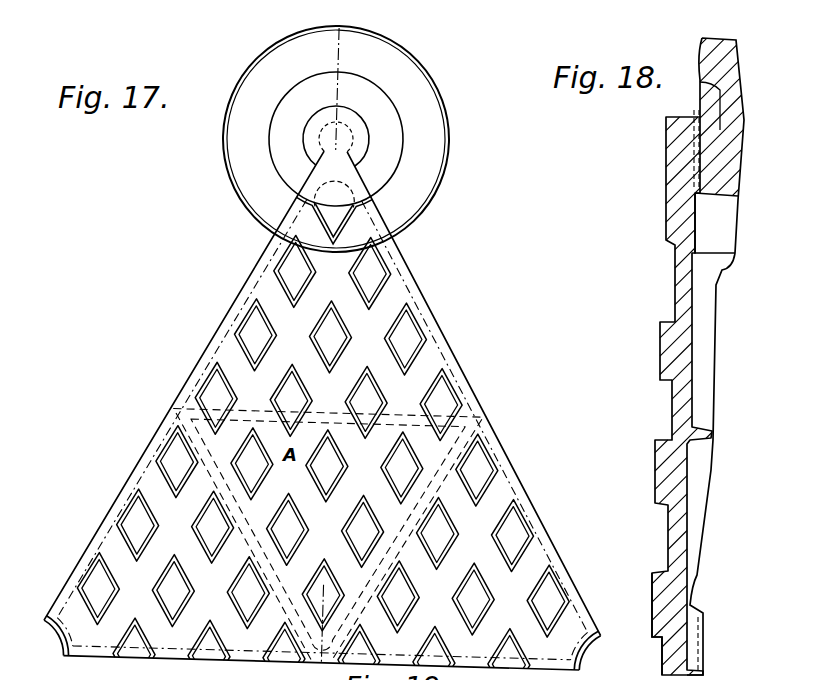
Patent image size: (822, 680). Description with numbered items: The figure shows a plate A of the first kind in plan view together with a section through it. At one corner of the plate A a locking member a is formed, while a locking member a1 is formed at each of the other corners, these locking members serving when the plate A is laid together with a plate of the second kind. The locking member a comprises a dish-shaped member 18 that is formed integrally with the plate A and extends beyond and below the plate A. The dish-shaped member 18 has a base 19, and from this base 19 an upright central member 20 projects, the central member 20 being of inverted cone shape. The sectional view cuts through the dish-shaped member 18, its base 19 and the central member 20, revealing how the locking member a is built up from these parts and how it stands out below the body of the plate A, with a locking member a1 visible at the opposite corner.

In FIG. 17, the dish-shaped member 18 is at (458, 92).
In FIG. 18, the dish-shaped member 18 is at (717, 80).
In FIG. 17, the base 19 is at (336, 139).
In FIG. 18, the base 19 is at (698, 120).
In FIG. 17, the upright central member 20 is at (314, 138).
In FIG. 18, the upright central member 20 is at (673, 134).
In FIG. 17, the locking member a is at (348, 164).
In FIG. 17, the plate A is at (328, 407).
In FIG. 18, the plate A is at (671, 338).
In FIG. 17, the locking member a1 is at (53, 619).
In FIG. 18, the locking member a1 is at (646, 625).